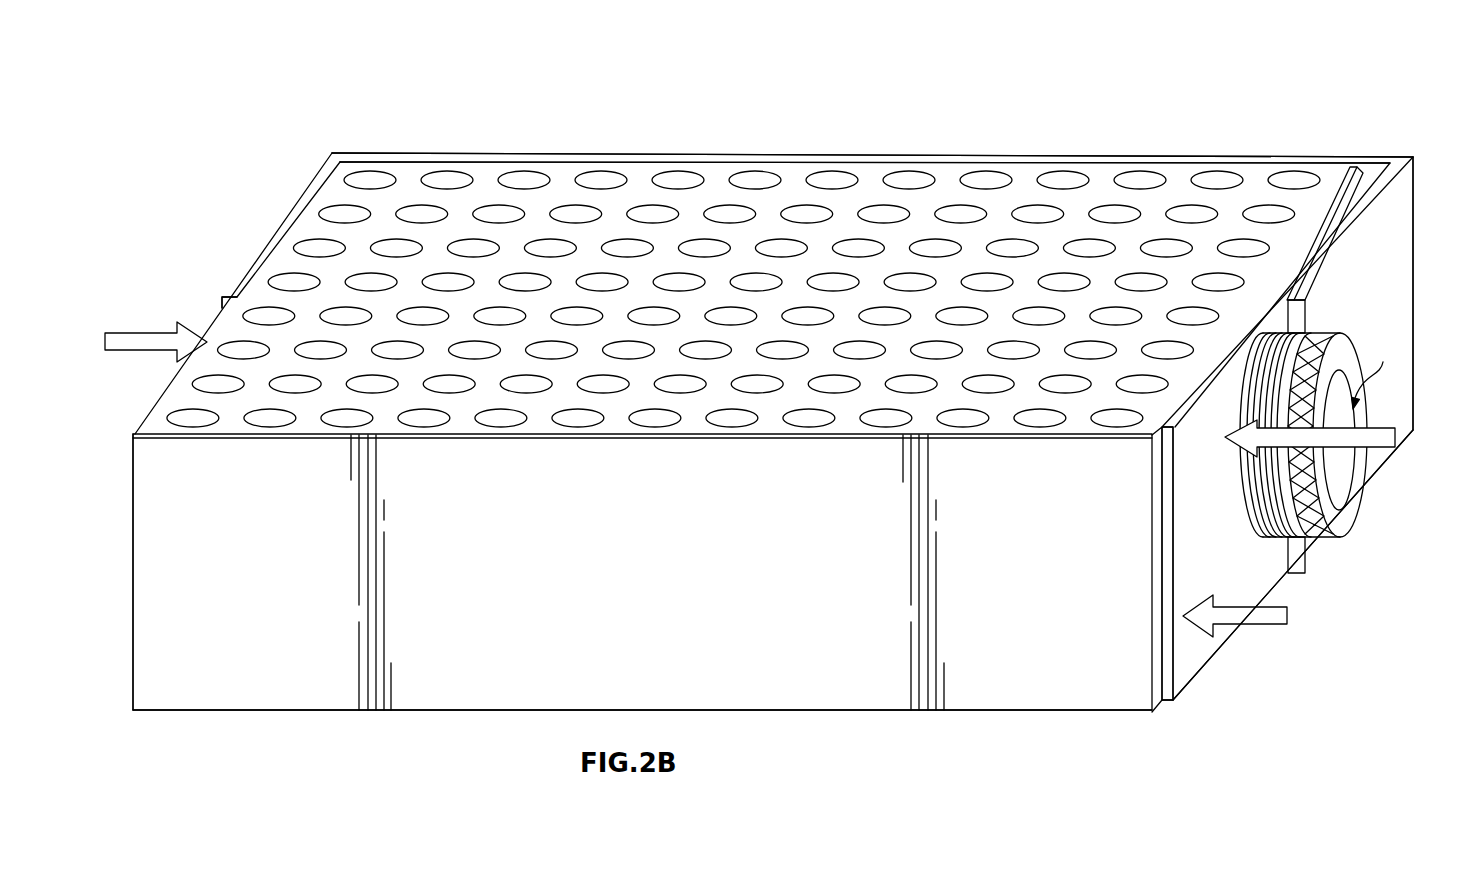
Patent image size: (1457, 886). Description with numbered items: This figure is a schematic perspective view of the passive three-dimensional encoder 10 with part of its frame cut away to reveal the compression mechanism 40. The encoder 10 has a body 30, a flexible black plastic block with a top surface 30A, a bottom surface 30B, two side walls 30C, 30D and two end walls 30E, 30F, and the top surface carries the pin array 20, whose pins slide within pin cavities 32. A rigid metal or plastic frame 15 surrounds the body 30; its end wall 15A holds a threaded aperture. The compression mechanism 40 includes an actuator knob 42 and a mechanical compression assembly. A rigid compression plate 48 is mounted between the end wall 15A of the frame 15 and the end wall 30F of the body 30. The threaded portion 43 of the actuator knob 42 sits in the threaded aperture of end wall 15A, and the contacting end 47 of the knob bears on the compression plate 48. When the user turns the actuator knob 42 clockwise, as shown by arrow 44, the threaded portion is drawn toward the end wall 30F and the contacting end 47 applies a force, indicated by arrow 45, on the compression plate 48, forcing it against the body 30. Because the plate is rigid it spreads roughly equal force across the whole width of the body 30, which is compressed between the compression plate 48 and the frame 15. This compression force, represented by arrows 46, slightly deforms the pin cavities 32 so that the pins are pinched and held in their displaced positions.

The passive 3D encoder 10 is at (230, 133).
The frame 15 is at (1290, 150).
The end wall 15A is at (1403, 211).
The pin array 20 is at (312, 232).
The body 30 is at (807, 714).
The top surface 30A is at (945, 185).
The bottom surface 30B is at (1000, 713).
The side wall 30C is at (642, 162).
The side wall 30D is at (263, 697).
The end wall 30E is at (217, 327).
The end wall 30F is at (1157, 562).
The pin cavities 32 is at (528, 178).
The compression mechanism 40 is at (1309, 416).
The actuator knob 42 is at (1353, 530).
The threaded portion 43 is at (1267, 398).
The arrow 44 is at (1378, 370).
The arrow 45 is at (1392, 448).
The arrows 46 is at (138, 332).
The contacting end 47 is at (1237, 458).
The compression plate 48 is at (1193, 660).